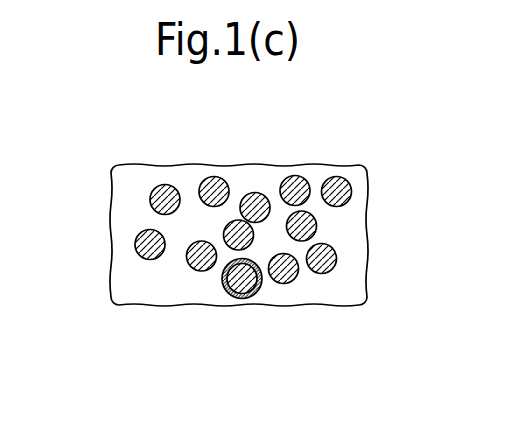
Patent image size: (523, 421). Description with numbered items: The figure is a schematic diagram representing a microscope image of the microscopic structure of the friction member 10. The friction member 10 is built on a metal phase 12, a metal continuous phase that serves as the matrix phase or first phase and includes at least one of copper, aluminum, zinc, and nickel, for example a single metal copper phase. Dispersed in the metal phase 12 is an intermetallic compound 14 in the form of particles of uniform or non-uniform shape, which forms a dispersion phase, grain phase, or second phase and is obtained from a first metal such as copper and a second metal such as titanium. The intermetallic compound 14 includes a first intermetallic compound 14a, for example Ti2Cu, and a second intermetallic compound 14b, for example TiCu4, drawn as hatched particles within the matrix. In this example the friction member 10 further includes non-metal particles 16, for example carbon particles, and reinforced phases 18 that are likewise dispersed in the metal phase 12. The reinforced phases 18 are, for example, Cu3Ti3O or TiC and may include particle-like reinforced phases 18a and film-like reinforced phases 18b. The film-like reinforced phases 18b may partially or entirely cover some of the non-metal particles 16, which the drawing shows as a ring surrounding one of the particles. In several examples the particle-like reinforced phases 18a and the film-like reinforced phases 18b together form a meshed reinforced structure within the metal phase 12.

The friction member 10 is at (364, 129).
The metal phase 12 is at (368, 235).
The intermetallic compound 14 is at (51, 180).
The first intermetallic compound 14a is at (151, 200).
The second intermetallic compound 14b is at (140, 239).
The non-metal particles 16 is at (291, 180).
The reinforced phases 18 is at (290, 349).
The particle-like reinforced phases 18a is at (317, 223).
The film-like reinforced phases 18b is at (250, 291).